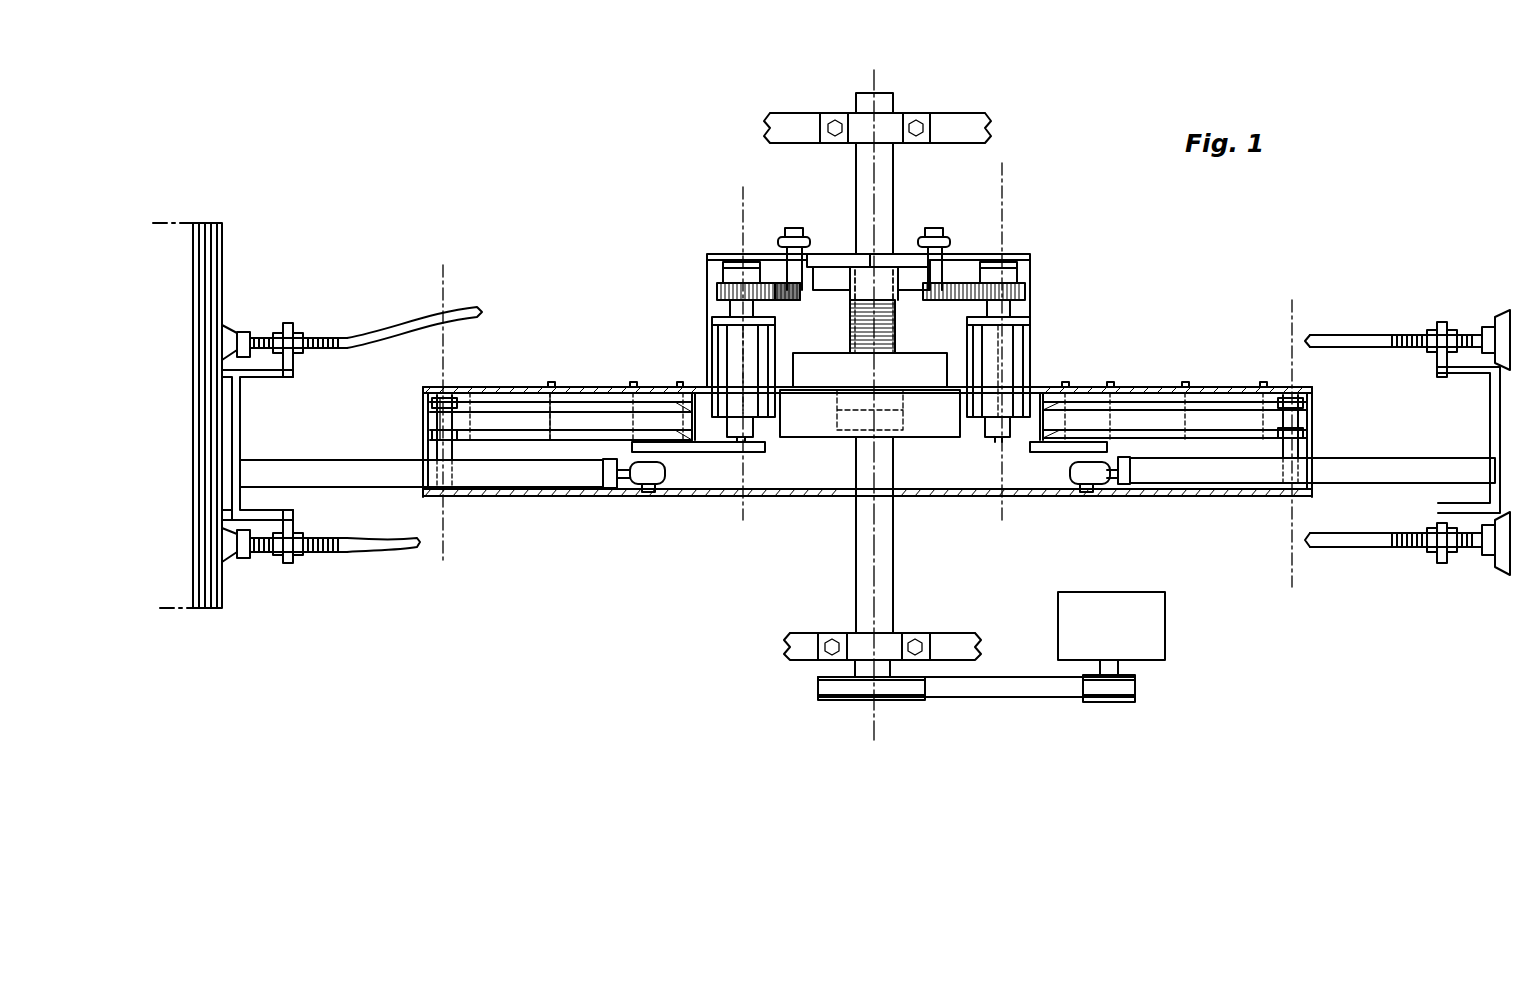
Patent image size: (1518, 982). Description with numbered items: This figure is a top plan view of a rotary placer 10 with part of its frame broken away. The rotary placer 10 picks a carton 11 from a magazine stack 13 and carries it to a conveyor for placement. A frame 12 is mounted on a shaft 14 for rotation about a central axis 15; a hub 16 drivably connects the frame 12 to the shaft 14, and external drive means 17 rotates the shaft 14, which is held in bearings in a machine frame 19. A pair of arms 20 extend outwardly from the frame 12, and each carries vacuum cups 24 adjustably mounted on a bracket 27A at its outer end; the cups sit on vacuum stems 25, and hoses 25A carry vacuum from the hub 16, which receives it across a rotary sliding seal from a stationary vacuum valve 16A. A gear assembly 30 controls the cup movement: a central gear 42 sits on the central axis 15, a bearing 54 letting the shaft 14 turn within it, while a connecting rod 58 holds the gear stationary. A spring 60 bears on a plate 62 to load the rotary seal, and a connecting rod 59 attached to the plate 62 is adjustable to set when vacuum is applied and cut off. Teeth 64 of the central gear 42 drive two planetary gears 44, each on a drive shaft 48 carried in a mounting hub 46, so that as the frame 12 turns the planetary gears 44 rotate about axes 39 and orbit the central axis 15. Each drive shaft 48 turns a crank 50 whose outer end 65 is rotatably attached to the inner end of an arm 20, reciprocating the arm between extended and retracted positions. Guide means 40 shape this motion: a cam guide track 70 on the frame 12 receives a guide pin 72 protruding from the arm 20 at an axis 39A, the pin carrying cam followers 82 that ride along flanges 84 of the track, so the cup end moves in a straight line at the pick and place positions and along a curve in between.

The rotary placer 10 is at (640, 278).
The carton 11 is at (225, 292).
The frame 12 is at (713, 497).
The magazine stack 13 is at (188, 326).
The shaft 14 is at (893, 578).
The central axis 15 is at (866, 535).
The hub 16 is at (831, 452).
The vacuum valve 16A is at (925, 372).
The external drive means 17 is at (1165, 592).
The machine frame 19 is at (958, 130).
The arm 20 is at (358, 462).
The vacuum cup 24 is at (1500, 326).
The vacuum stem 25 is at (320, 340).
The hose 25A is at (477, 312).
The bracket 27A is at (240, 410).
The gear assembly 30 is at (783, 314).
The axis 39 is at (740, 213).
The axis 39A is at (445, 290).
The guide means 40 is at (409, 427).
The central gear 42 is at (822, 290).
The planetary gear 44 is at (717, 290).
The mounting hub 46 is at (715, 355).
The drive shaft 48 is at (745, 440).
The crank 50 is at (695, 453).
The bearing 54 is at (893, 287).
The connecting rod 58 is at (785, 240).
The connecting rod 59 is at (920, 277).
The spring 60 is at (957, 262).
The plate 62 is at (725, 332).
The teeth 64 is at (750, 433).
The outer end 65 is at (648, 470).
The cam guide track 70 is at (600, 420).
The guide pin 72 is at (437, 450).
The cam follower 82 is at (468, 414).
The flange 84 is at (575, 412).